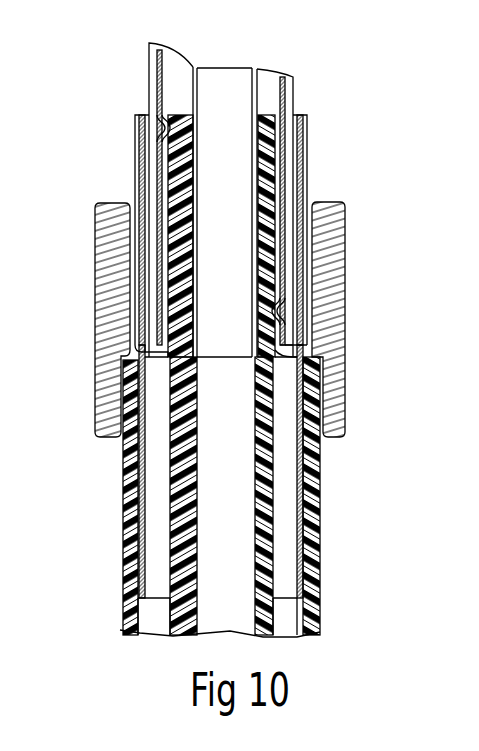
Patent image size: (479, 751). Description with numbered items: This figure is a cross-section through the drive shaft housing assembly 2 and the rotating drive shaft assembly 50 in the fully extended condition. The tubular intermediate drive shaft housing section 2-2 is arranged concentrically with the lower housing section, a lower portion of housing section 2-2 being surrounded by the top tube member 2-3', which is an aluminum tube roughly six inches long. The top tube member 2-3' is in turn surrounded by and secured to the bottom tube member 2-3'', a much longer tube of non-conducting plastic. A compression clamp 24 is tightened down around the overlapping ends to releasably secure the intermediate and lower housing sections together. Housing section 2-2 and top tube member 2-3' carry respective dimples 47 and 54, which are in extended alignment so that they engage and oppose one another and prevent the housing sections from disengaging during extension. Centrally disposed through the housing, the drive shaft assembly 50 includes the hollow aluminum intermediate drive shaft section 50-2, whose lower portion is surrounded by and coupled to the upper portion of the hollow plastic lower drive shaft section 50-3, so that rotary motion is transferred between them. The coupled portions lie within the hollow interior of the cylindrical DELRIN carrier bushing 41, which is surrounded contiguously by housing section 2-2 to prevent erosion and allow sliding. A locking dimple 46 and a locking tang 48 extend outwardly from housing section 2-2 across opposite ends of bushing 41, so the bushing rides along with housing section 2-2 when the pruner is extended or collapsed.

The drive shaft housing assembly 2 is at (333, 162).
The intermediate drive shaft housing section 2-2 is at (157, 92).
The top tube member 2-3' is at (168, 230).
The bottom tube member 2-3'' is at (167, 490).
The compression clamp 24 is at (345, 240).
The carrier bushing 41 is at (278, 160).
The locking dimple 46 is at (157, 130).
The dimple 47 is at (300, 356).
The locking tang 48 is at (160, 343).
The drive shaft assembly 50 is at (272, 485).
The intermediate drive shaft section 50-2 is at (255, 95).
The lower drive shaft section 50-3 is at (263, 205).
The dimple 54 is at (287, 312).